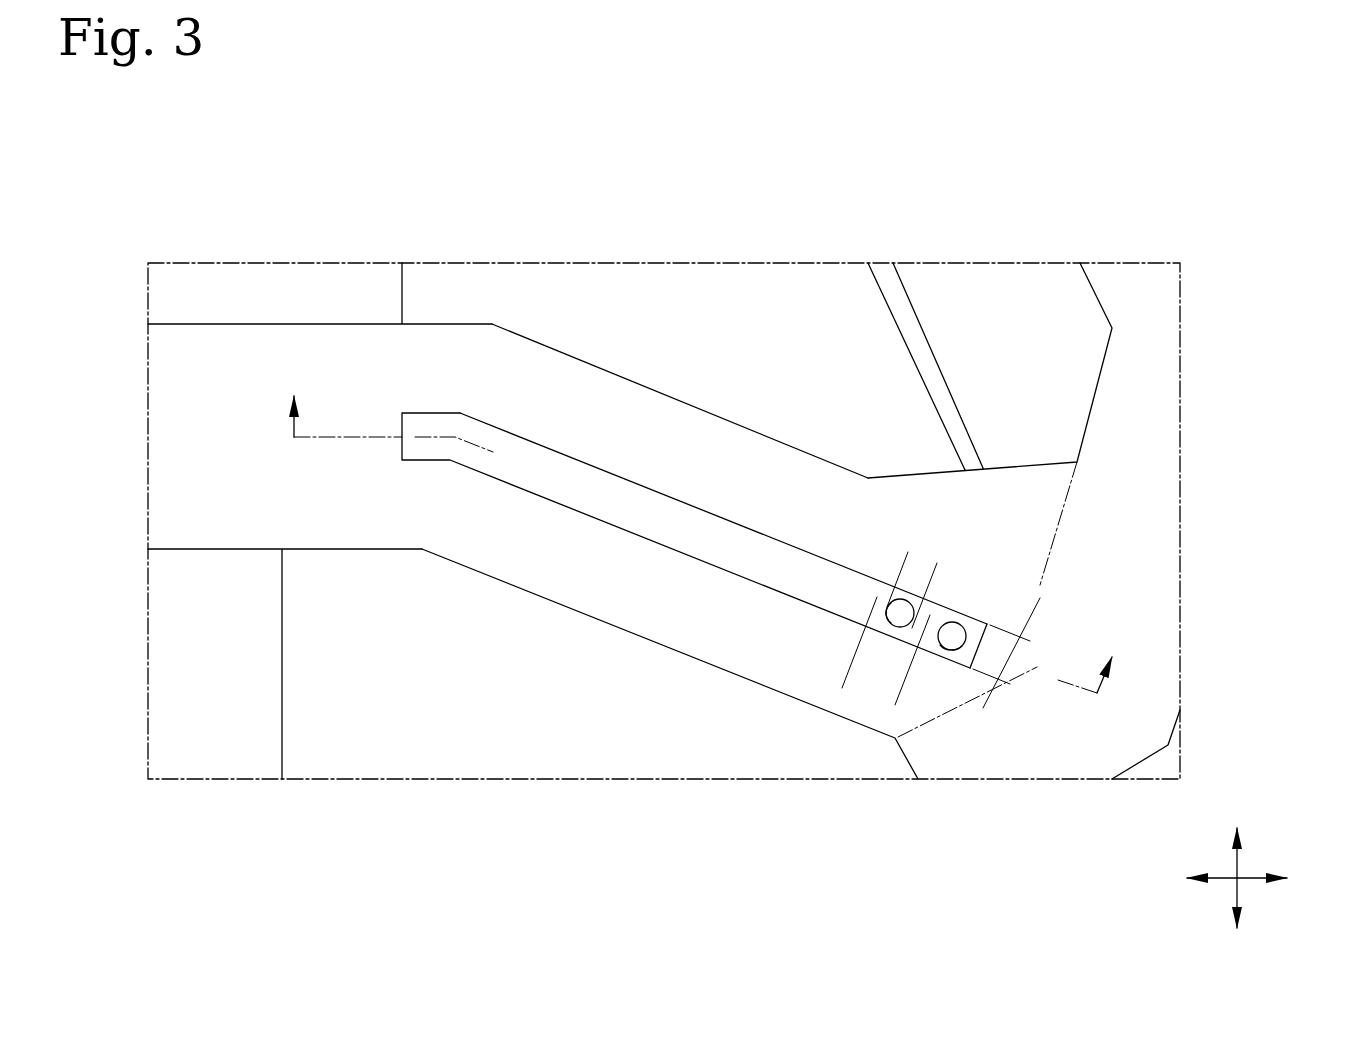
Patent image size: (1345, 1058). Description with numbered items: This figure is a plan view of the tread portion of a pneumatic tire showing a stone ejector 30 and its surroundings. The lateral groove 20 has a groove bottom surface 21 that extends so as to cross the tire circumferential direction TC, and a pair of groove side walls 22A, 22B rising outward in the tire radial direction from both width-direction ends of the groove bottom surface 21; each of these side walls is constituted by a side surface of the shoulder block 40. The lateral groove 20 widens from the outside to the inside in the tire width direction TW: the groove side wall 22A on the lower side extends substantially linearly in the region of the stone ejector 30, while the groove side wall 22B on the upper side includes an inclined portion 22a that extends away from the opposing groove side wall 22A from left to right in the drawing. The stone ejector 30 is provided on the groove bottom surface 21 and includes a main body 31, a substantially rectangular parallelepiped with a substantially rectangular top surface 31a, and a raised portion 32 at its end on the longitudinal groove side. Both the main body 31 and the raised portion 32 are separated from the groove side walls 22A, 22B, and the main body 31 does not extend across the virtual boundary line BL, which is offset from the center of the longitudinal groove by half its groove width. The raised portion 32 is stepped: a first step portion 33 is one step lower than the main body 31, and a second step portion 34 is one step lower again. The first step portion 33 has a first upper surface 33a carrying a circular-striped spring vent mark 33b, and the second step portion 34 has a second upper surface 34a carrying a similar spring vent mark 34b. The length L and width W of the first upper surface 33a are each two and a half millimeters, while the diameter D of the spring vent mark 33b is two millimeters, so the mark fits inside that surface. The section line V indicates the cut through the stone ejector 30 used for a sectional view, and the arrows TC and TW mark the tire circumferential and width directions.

The lateral groove 20 is at (664, 521).
The groove bottom surface 21 is at (626, 588).
The groove side wall 22A is at (668, 637).
The groove side wall 22B is at (706, 402).
The inclined portion 22a is at (1022, 473).
The stone ejector 30 is at (722, 585).
The main body 31 is at (736, 522).
The top surface 31a is at (652, 497).
The raised portion 32 is at (1043, 549).
The first step portion 33 is at (932, 599).
The first upper surface 33a is at (884, 600).
The spring vent mark 33b is at (886, 612).
The second step portion 34 is at (974, 617).
The second upper surface 34a is at (958, 648).
The spring vent mark 34b is at (948, 648).
The shoulder block 40 is at (806, 283).
The virtual boundary line BL is at (1058, 528).
The diameter of spring vent mark D is at (963, 585).
The length of first upper surface L is at (925, 710).
The width of first upper surface W is at (983, 708).
The section line V- V is at (698, 566).
The tire circumferential direction TC is at (1240, 858).
The tire width direction TW is at (1245, 881).